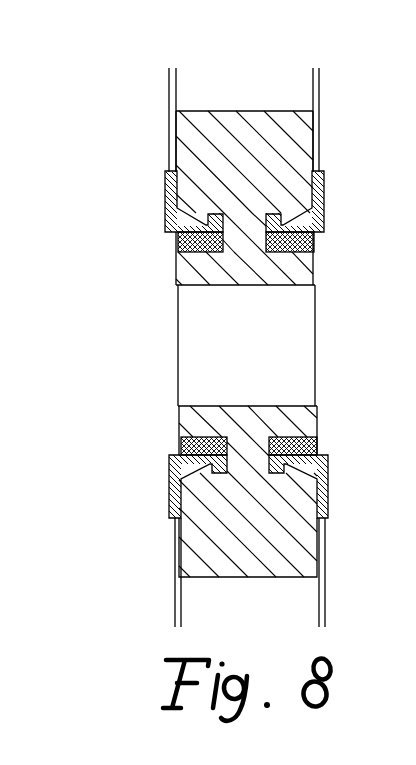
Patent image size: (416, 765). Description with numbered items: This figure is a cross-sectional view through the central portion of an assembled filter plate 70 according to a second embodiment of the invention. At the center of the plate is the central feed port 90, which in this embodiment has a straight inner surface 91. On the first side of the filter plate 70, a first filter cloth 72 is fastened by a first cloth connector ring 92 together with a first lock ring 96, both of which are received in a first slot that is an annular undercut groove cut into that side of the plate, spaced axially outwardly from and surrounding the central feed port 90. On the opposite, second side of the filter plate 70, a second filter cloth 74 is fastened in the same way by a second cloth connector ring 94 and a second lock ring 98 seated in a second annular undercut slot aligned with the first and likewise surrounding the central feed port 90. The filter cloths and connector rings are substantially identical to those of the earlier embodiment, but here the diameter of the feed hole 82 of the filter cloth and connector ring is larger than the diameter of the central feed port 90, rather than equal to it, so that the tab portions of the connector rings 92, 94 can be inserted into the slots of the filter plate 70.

The filter plate 70 is at (228, 111).
The first filter cloth 72 is at (318, 92).
The second filter cloth 74 is at (175, 112).
The feed hole 82 is at (316, 234).
The central feed port 90 is at (270, 337).
The straight inner surface 91 is at (298, 284).
The first cloth connector ring 92 is at (325, 199).
The second cloth connector ring 94 is at (165, 200).
The first lock ring 96 is at (317, 245).
The second lock ring 98 is at (180, 244).